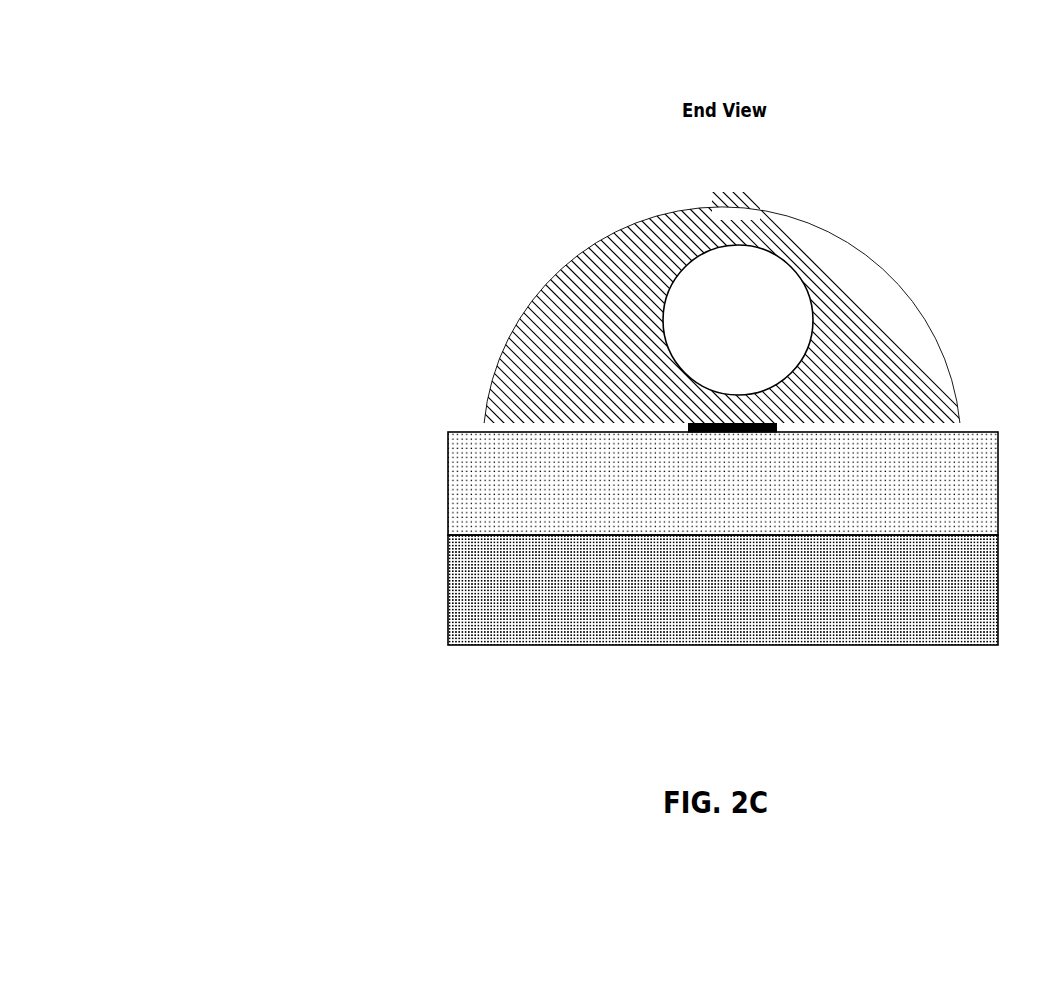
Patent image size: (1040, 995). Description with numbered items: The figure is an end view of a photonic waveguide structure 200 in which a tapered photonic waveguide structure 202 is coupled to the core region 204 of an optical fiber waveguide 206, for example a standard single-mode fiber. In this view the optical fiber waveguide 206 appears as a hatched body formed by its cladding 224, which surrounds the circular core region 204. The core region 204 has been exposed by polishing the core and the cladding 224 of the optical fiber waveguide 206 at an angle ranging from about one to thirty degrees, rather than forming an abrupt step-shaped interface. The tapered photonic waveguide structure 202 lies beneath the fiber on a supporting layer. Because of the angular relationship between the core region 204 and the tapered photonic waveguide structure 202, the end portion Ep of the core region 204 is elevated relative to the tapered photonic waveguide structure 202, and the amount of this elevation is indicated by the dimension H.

The photonic waveguide structure 200 is at (208, 89).
The tapered photonic waveguide structure 202 is at (727, 437).
The core region 204 is at (753, 336).
The optical fiber waveguide 206 is at (533, 256).
The cladding 224 is at (753, 216).
The end portion Ep is at (815, 325).
The elevation height H is at (738, 397).